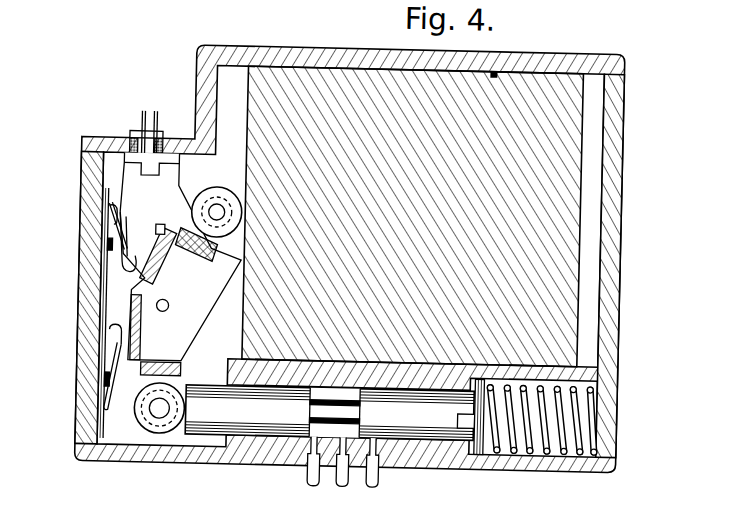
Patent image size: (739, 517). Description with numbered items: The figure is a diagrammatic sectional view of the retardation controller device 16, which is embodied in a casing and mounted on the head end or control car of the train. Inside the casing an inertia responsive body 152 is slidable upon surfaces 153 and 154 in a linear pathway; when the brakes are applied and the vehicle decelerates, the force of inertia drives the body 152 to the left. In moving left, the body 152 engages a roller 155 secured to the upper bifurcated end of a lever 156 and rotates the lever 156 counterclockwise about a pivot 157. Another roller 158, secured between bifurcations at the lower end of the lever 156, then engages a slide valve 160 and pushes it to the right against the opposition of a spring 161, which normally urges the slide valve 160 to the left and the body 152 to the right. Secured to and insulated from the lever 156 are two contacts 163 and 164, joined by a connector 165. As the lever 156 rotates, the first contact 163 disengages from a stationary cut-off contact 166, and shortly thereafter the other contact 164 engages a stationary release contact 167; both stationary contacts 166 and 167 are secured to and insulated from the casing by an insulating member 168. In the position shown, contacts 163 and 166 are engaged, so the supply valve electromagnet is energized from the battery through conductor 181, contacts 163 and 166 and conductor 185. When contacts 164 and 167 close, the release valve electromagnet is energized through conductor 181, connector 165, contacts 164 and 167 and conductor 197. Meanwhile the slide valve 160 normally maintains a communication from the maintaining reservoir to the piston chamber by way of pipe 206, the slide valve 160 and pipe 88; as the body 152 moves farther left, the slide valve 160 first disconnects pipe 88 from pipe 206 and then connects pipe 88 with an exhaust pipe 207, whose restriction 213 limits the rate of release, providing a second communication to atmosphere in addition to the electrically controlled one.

The retardation controller device 16 is at (626, 64).
The inertia responsive body 152 is at (557, 150).
The surface 153 is at (508, 66).
The surface 154 is at (534, 355).
The roller 155 is at (211, 190).
The lever 156 is at (185, 297).
The pivot 157 is at (174, 311).
The roller 158 is at (168, 434).
The slide valve 160 is at (266, 416).
The spring 161 is at (585, 407).
The contact 163 is at (154, 243).
The contact 164 is at (121, 335).
The connector 165 is at (187, 278).
The stationary cut-off contact 166 is at (114, 237).
The stationary release contact 167 is at (113, 359).
The insulating member 168 is at (114, 267).
The conductor 181 is at (157, 113).
The conductor 185 is at (143, 119).
The conductor 197 is at (145, 114).
The pipe 206 is at (317, 471).
The pipe 88 is at (356, 470).
The exhaust pipe 207 is at (381, 469).
The restriction 213 is at (388, 444).